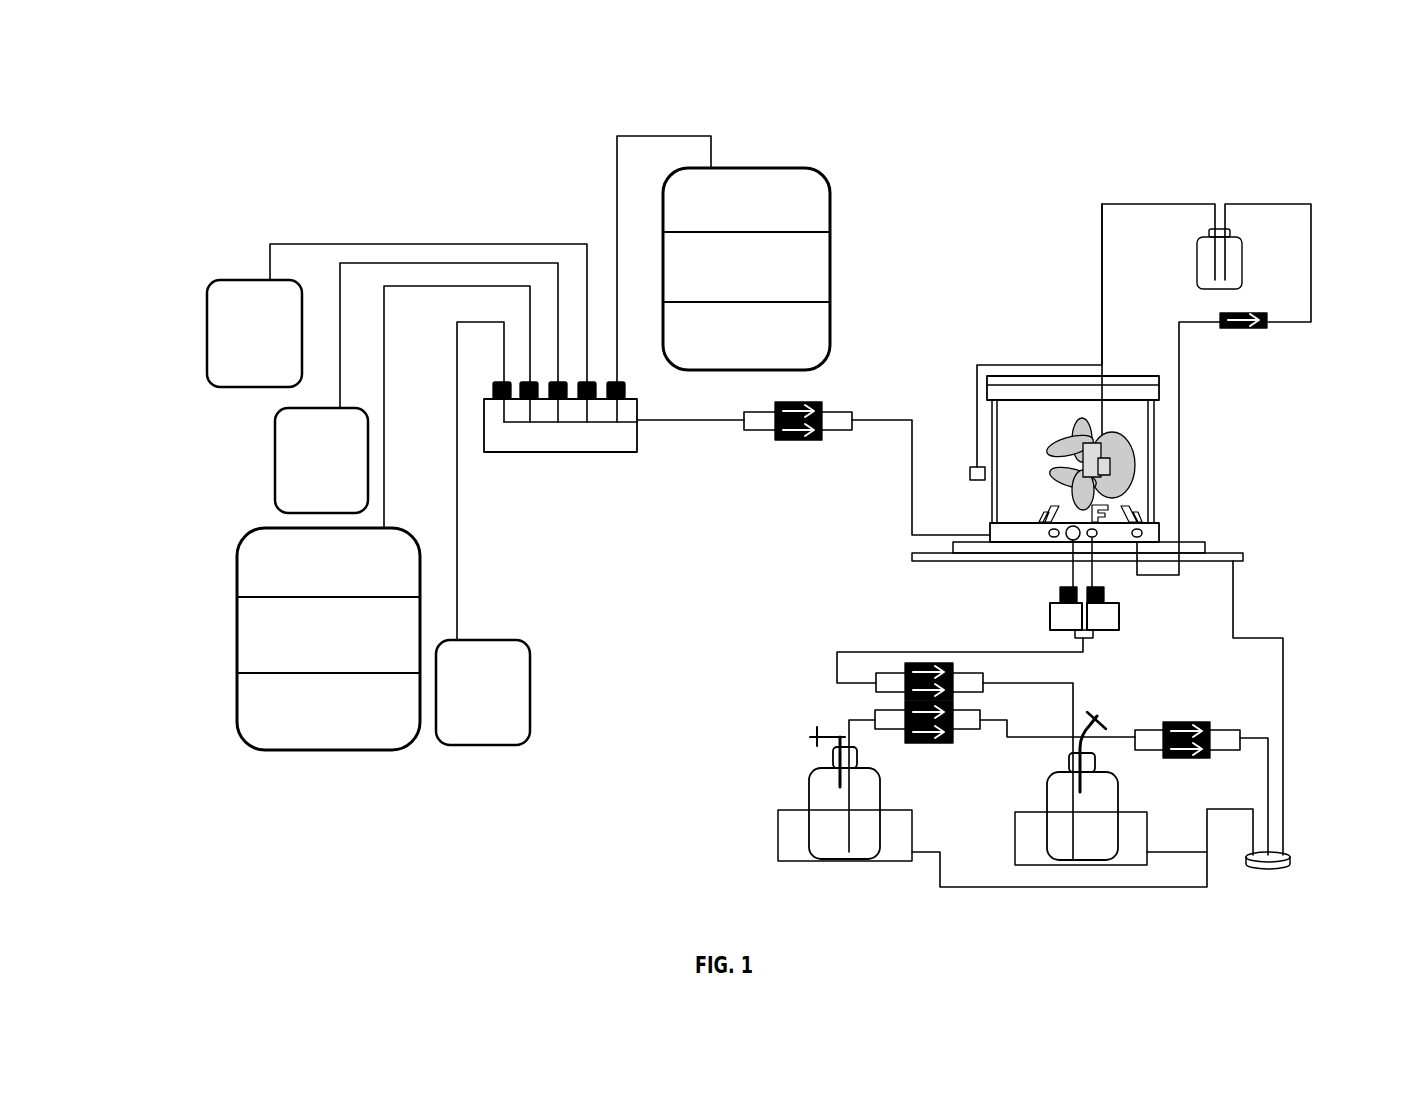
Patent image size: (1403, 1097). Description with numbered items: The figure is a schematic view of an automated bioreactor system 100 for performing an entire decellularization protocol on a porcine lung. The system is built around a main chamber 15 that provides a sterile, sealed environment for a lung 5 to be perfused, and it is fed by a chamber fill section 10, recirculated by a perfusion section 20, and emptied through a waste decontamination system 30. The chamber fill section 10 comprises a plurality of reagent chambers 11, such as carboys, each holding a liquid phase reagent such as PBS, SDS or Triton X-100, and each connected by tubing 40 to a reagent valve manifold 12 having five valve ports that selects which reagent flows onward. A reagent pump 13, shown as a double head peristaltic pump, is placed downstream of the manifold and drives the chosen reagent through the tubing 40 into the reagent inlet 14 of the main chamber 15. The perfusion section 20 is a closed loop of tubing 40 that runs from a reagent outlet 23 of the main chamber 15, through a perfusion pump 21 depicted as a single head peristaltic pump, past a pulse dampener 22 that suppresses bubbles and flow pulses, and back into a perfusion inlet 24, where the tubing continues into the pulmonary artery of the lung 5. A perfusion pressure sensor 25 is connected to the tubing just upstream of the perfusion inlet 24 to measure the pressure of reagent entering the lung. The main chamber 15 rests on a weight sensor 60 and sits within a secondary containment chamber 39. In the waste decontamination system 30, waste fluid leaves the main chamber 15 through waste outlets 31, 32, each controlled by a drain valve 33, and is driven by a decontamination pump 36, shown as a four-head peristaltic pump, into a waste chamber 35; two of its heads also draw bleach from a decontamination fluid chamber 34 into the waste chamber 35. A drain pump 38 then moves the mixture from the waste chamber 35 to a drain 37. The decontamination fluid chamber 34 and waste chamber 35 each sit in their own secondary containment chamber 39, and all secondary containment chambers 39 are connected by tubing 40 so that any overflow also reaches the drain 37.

The automated bioreactor system 100 is at (1260, 105).
The chamber fill section 10 is at (609, 560).
The reagent chamber 11 is at (814, 166).
The reagent valve manifold 12 is at (588, 457).
The reagent pump 13 is at (802, 449).
The tubing 40 is at (715, 428).
The perfusion section 20 is at (1277, 402).
The main chamber 15 is at (1140, 372).
The perfusion inlet 24 is at (1097, 362).
The lung 5 is at (1134, 463).
The perfusion pressure sensor 25 is at (974, 462).
The pulse dampener 22 is at (1203, 224).
The perfusion pump 21 is at (1238, 333).
The secondary containment chamber 39 is at (908, 559).
The weight sensor 60 is at (1212, 548).
The waste decontamination system 30 is at (1314, 722).
The reagent inlet 14 is at (1048, 538).
The waste outlet 31 is at (1067, 543).
The waste outlet 32 is at (1097, 544).
The reagent outlet 23 is at (1139, 548).
The drain valve 33 is at (1124, 642).
The decontamination pump 36 is at (936, 654).
The drain pump 38 is at (1182, 719).
The decontamination fluid chamber 34 is at (804, 775).
The waste chamber 35 is at (1042, 782).
The drain 37 is at (1282, 868).